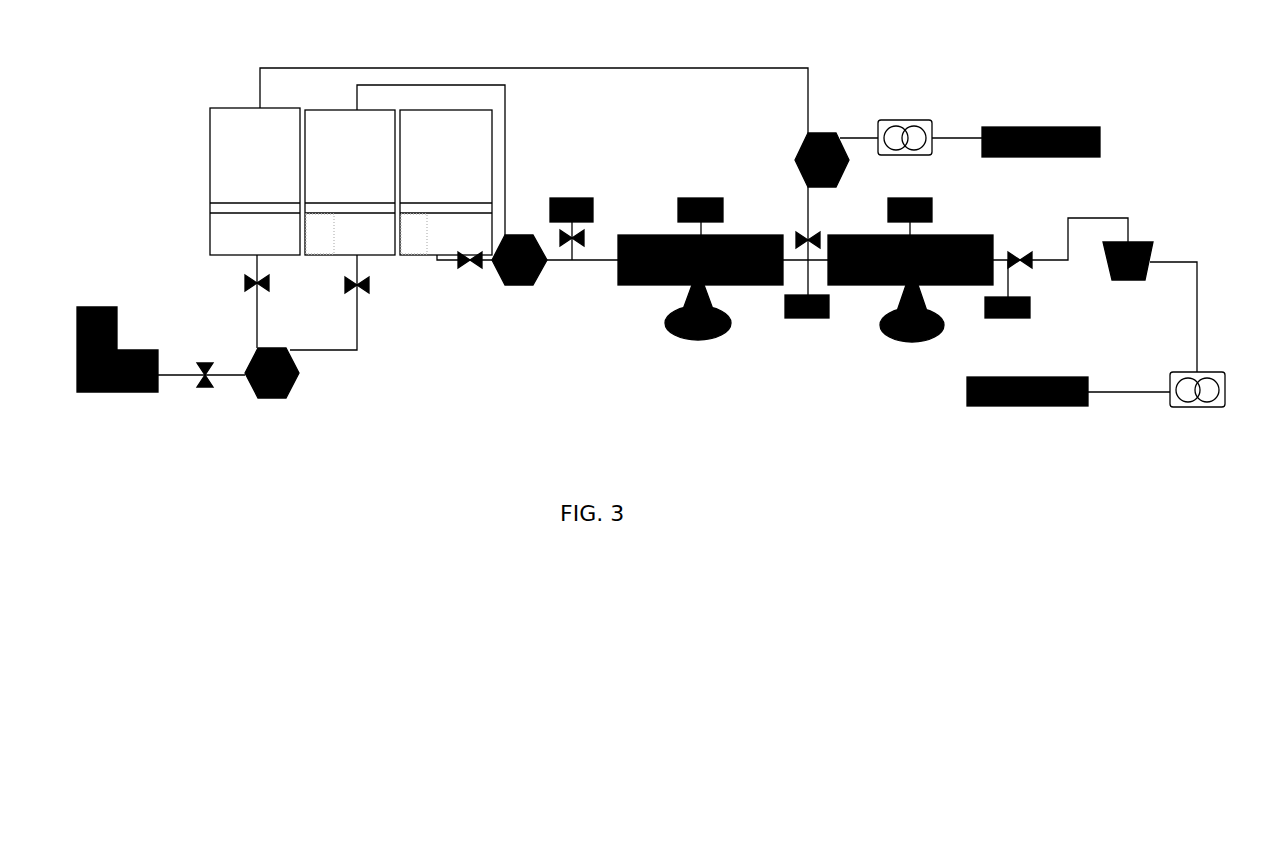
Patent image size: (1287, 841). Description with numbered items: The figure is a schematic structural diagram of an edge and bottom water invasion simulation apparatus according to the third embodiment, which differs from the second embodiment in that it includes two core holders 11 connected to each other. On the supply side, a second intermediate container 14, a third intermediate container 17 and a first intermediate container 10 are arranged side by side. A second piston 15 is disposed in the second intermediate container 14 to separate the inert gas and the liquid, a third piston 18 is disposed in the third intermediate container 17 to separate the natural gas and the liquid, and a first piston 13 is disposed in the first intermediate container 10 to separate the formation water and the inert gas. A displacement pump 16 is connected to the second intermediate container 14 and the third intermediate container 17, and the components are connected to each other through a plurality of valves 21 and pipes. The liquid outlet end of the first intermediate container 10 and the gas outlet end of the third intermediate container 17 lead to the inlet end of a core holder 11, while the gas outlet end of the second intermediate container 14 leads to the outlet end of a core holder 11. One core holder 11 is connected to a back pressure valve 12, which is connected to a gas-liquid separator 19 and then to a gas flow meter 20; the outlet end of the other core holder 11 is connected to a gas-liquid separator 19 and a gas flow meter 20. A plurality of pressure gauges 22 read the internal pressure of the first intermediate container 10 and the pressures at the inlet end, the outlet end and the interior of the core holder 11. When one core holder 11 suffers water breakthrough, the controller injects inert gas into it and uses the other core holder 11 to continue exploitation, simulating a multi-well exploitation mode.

The first intermediate container 10 is at (440, 107).
The core holder 11 is at (635, 285).
The back pressure valve 12 is at (1130, 242).
The first piston 13 is at (427, 213).
The second intermediate container 14 is at (240, 107).
The second piston 15 is at (217, 203).
The displacement pump 16 is at (107, 392).
The third intermediate container 17 is at (354, 107).
The third piston 18 is at (333, 213).
The gas-liquid separator 19 is at (905, 120).
The gas flow meter 20 is at (1088, 127).
The valve 21 is at (270, 398).
The pressure gauge 22 is at (577, 198).